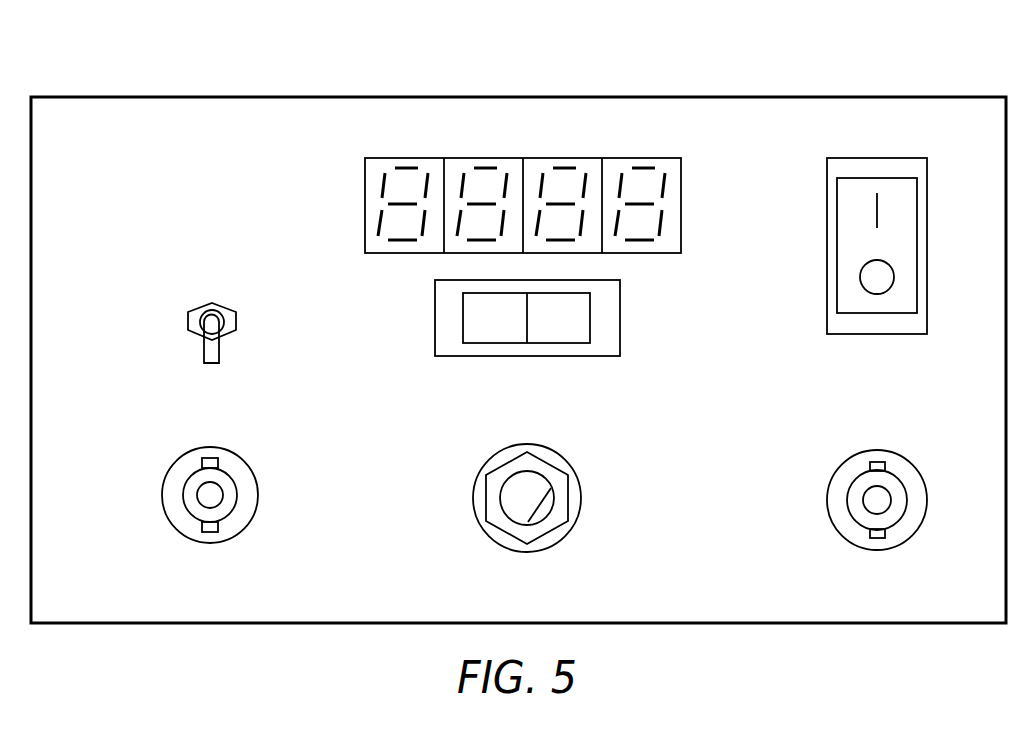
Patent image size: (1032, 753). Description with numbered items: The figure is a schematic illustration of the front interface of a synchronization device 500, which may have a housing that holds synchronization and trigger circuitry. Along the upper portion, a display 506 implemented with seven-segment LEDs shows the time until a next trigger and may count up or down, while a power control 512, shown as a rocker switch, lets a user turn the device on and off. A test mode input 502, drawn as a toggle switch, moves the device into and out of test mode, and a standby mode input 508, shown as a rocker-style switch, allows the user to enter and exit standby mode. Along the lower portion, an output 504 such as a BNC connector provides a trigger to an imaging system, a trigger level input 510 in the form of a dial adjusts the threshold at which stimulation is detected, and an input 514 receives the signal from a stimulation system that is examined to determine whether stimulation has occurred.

The synchronization device 500 is at (907, 63).
The test mode input 502 is at (218, 303).
The output 504 is at (208, 450).
The display 506 is at (392, 158).
The standby mode input 508 is at (435, 313).
The trigger level input 510 is at (512, 452).
The power control 512 is at (827, 192).
The input 514 is at (872, 455).